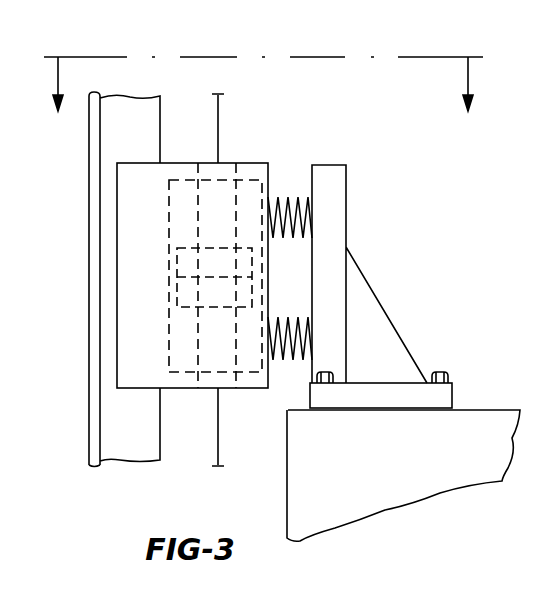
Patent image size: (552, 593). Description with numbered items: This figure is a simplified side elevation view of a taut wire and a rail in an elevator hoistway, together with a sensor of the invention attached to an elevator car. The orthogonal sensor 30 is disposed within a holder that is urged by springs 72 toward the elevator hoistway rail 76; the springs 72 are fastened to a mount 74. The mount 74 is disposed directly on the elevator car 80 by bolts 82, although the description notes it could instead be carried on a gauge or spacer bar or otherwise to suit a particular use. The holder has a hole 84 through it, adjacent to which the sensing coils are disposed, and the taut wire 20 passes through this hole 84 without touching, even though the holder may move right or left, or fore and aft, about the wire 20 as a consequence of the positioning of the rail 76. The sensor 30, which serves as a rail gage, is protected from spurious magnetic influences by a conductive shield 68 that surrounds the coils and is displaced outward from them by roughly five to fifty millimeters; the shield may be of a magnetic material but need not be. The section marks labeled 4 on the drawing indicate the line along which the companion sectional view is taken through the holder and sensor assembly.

The section line 4- 4 is at (263, 104).
The wire 20 is at (218, 118).
The orthogonal sensor 30 is at (170, 278).
The conductive shield 68 is at (168, 222).
The springs 72 is at (293, 240).
The mount 74 is at (336, 198).
The elevator hoistway rail 76 is at (132, 455).
The elevator car 80 is at (340, 497).
The bolts 82 is at (446, 372).
The hole 84 is at (232, 172).